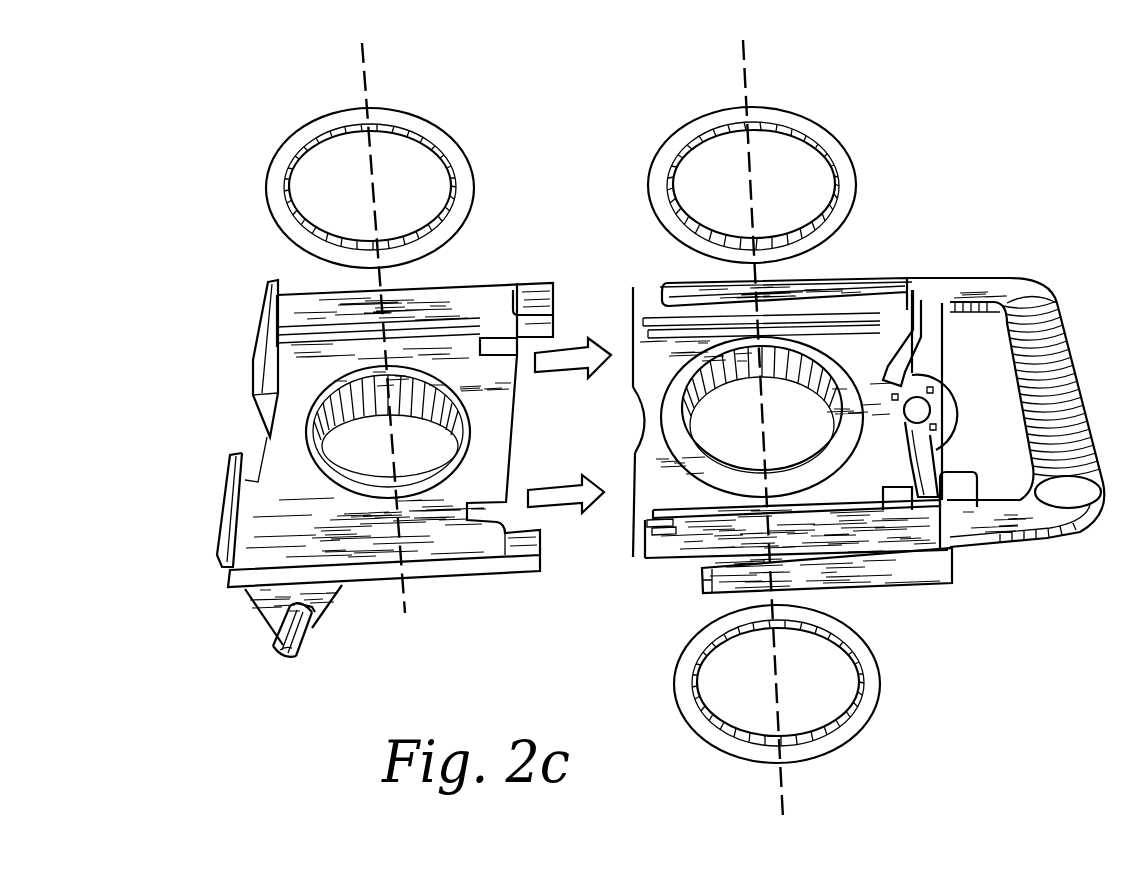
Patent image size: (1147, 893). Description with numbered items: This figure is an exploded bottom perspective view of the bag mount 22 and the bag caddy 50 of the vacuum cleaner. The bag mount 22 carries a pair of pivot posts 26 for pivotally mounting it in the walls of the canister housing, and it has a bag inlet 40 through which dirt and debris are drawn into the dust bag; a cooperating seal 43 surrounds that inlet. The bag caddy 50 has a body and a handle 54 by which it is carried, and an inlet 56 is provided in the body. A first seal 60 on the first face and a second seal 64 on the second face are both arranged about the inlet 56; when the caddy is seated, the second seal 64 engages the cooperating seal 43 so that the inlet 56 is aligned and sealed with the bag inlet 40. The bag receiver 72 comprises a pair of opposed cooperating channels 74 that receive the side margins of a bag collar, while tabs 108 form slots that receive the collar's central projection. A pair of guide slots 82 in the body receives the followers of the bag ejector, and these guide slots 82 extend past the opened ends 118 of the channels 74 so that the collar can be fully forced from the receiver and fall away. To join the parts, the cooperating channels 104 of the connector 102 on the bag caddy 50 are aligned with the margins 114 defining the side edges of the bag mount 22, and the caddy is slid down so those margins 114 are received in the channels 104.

The bag mount 22 is at (218, 523).
The pivot posts 26 is at (275, 625).
The bag inlet 40 is at (423, 403).
The cooperating seal 43 is at (412, 123).
The bag caddy 50 is at (861, 408).
The handle 54 is at (1057, 360).
The inlet 56 is at (802, 400).
The first seal 60 is at (798, 120).
The second seal 64 is at (870, 680).
The bag receiver 72 is at (810, 290).
The cooperating channels 74 is at (712, 305).
The guide slots 82 is at (643, 316).
The connector 102 is at (858, 578).
The cooperating channels 104 is at (700, 578).
The tabs 108 is at (982, 297).
The margins 114 is at (453, 283).
The opened ends 118 is at (657, 300).